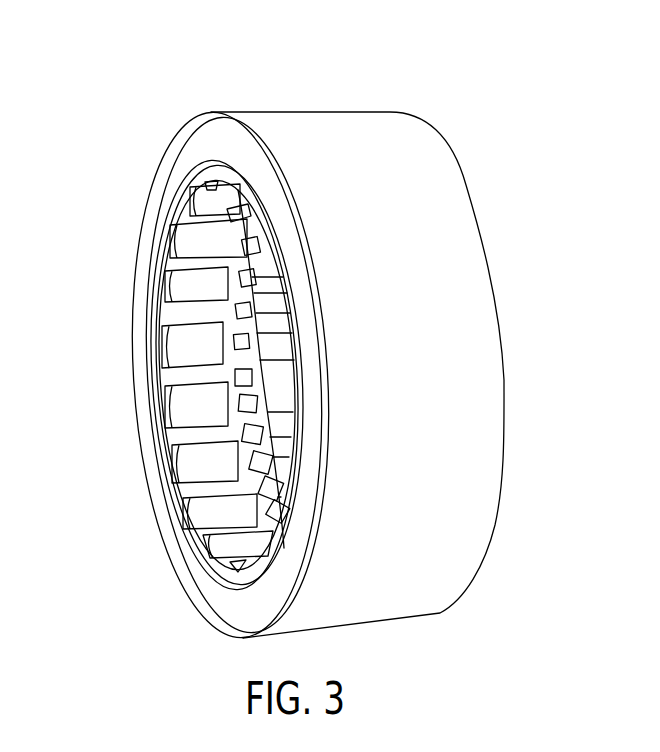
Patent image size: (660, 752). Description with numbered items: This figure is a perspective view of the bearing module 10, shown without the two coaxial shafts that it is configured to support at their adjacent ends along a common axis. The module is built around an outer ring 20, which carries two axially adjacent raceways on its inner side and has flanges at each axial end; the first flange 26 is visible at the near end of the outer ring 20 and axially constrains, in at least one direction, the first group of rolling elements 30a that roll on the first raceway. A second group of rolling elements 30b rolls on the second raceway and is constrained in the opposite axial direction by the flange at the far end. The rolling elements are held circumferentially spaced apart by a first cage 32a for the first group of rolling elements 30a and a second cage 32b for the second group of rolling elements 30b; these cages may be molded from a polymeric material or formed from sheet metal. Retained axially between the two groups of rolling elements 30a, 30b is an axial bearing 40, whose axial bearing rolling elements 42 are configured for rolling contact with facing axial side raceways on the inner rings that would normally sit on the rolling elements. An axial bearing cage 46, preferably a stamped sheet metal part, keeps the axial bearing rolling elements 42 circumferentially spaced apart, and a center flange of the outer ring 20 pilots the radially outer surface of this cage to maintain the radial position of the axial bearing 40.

The bearing module 10 is at (462, 99).
The outer ring 20 is at (447, 183).
The first flange 26 is at (160, 462).
The first group of rolling elements 30a is at (207, 512).
The second group of rolling elements 30b is at (280, 363).
The first cage 32a is at (183, 490).
The second cage 32b is at (265, 352).
The axial bearing 40 is at (236, 420).
The axial bearing rolling elements 42 is at (280, 333).
The axial bearing cage 46 is at (246, 248).